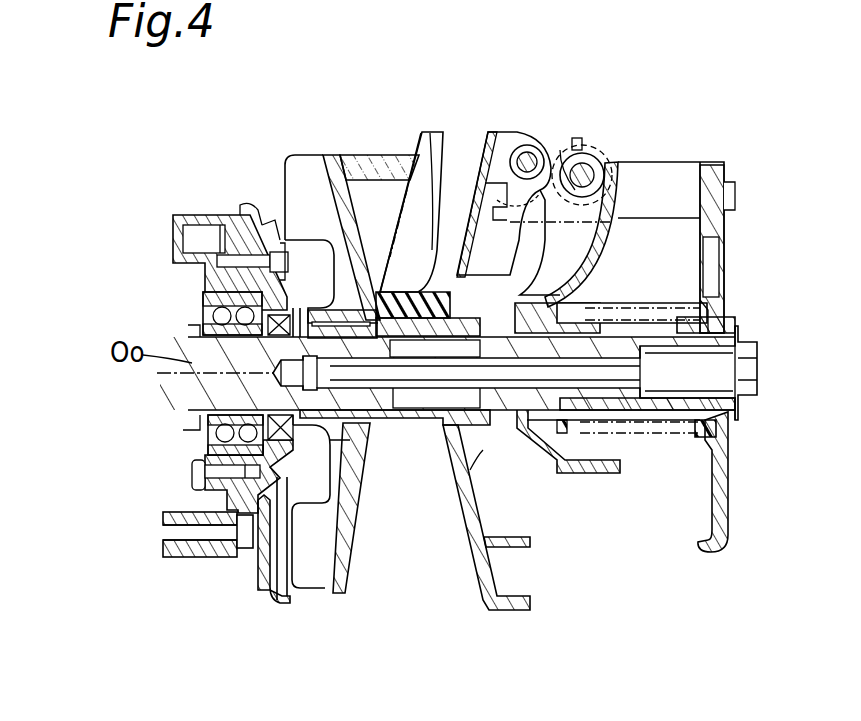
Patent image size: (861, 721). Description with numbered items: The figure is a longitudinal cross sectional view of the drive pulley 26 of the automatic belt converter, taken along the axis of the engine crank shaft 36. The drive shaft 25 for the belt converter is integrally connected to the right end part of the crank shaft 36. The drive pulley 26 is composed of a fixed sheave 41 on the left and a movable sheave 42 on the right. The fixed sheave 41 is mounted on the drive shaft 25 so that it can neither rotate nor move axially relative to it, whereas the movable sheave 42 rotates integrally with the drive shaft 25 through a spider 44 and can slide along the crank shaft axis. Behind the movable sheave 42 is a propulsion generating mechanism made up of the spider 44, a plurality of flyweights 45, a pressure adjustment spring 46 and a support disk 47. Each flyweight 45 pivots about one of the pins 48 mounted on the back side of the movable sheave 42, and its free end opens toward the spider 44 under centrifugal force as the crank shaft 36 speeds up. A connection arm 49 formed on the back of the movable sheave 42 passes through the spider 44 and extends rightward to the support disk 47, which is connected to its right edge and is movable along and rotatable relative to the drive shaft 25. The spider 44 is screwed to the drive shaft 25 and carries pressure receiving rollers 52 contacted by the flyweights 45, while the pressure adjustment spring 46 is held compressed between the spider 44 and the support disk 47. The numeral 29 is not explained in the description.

The drive shaft 25 is at (418, 413).
The drive pulley 26 is at (262, 170).
The brake drum 29 is at (525, 252).
The crank shaft 36 is at (213, 390).
The fixed sheave 41 is at (330, 152).
The movable sheave 42 is at (525, 612).
The spider 44 is at (595, 470).
The flyweights 45 is at (420, 273).
The pressure adjustment spring 46 is at (640, 433).
The support disk 47 is at (703, 460).
The pins 48 is at (527, 253).
The connection arm 49 is at (647, 205).
The pressure receiving rollers 52 is at (578, 150).